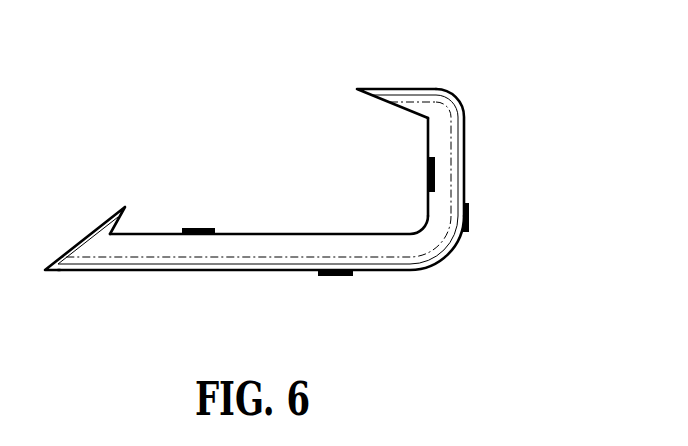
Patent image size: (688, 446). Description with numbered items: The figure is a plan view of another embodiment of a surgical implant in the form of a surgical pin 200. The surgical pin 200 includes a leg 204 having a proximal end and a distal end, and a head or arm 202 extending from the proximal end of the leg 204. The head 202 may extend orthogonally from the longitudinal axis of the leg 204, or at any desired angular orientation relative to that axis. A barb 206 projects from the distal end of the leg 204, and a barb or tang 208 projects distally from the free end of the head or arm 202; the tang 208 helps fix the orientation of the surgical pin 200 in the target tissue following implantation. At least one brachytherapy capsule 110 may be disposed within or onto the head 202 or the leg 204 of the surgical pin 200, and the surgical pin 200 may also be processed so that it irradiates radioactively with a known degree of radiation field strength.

The surgical pin 200 is at (304, 165).
The head or arm 202 is at (465, 150).
The leg 204 is at (272, 252).
The barb 206 is at (108, 222).
The barb or tang 208 is at (373, 88).
The brachytherapy capsule 110 is at (435, 172).